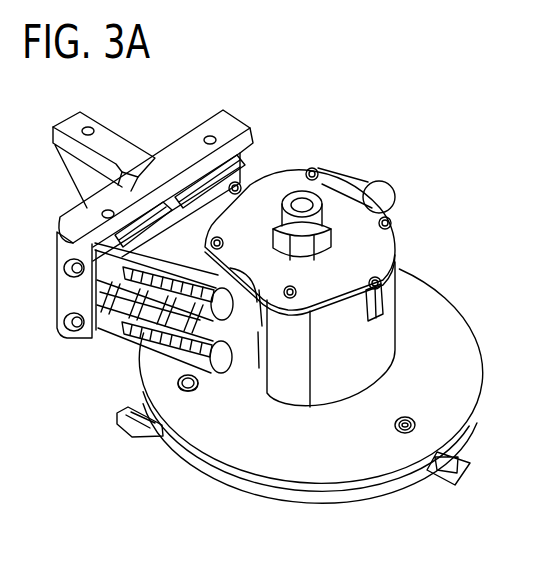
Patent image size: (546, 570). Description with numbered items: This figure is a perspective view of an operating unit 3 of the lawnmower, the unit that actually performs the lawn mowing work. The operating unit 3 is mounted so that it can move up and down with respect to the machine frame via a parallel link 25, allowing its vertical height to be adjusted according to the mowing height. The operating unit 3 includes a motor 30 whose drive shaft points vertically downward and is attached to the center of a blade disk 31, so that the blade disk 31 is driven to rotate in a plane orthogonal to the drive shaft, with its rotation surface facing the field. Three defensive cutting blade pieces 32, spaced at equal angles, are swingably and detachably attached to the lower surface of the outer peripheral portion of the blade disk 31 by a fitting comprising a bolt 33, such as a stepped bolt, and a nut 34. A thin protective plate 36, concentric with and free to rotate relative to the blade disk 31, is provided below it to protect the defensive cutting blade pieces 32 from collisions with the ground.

The operating unit 3 is at (428, 252).
The parallel link 25 is at (127, 290).
The motor 30 is at (373, 345).
The blade disk 31 is at (240, 476).
The defensive cutting blade piece 32 is at (124, 433).
The bolt 33 is at (396, 430).
The nut 34 is at (418, 424).
The protective plate 36 is at (318, 503).